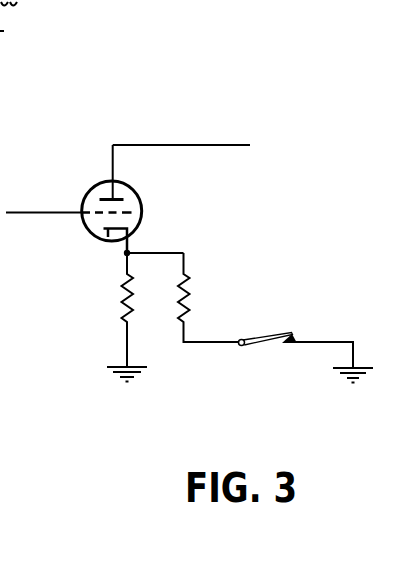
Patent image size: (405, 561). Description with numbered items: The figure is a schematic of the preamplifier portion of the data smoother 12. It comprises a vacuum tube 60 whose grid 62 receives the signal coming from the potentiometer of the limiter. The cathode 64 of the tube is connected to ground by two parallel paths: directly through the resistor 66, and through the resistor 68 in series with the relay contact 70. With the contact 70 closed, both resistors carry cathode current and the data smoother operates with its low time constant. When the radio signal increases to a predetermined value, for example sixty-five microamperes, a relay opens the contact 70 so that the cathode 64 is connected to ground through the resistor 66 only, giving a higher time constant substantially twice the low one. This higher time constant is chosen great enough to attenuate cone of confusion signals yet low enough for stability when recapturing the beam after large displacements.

The data smoother 12 is at (368, 60).
The vacuum tube 60 is at (85, 195).
The grid 62 is at (123, 212).
The cathode 64 is at (118, 234).
The resistor 66 is at (122, 300).
The resistor 68 is at (190, 298).
The relay contact 70 is at (258, 335).